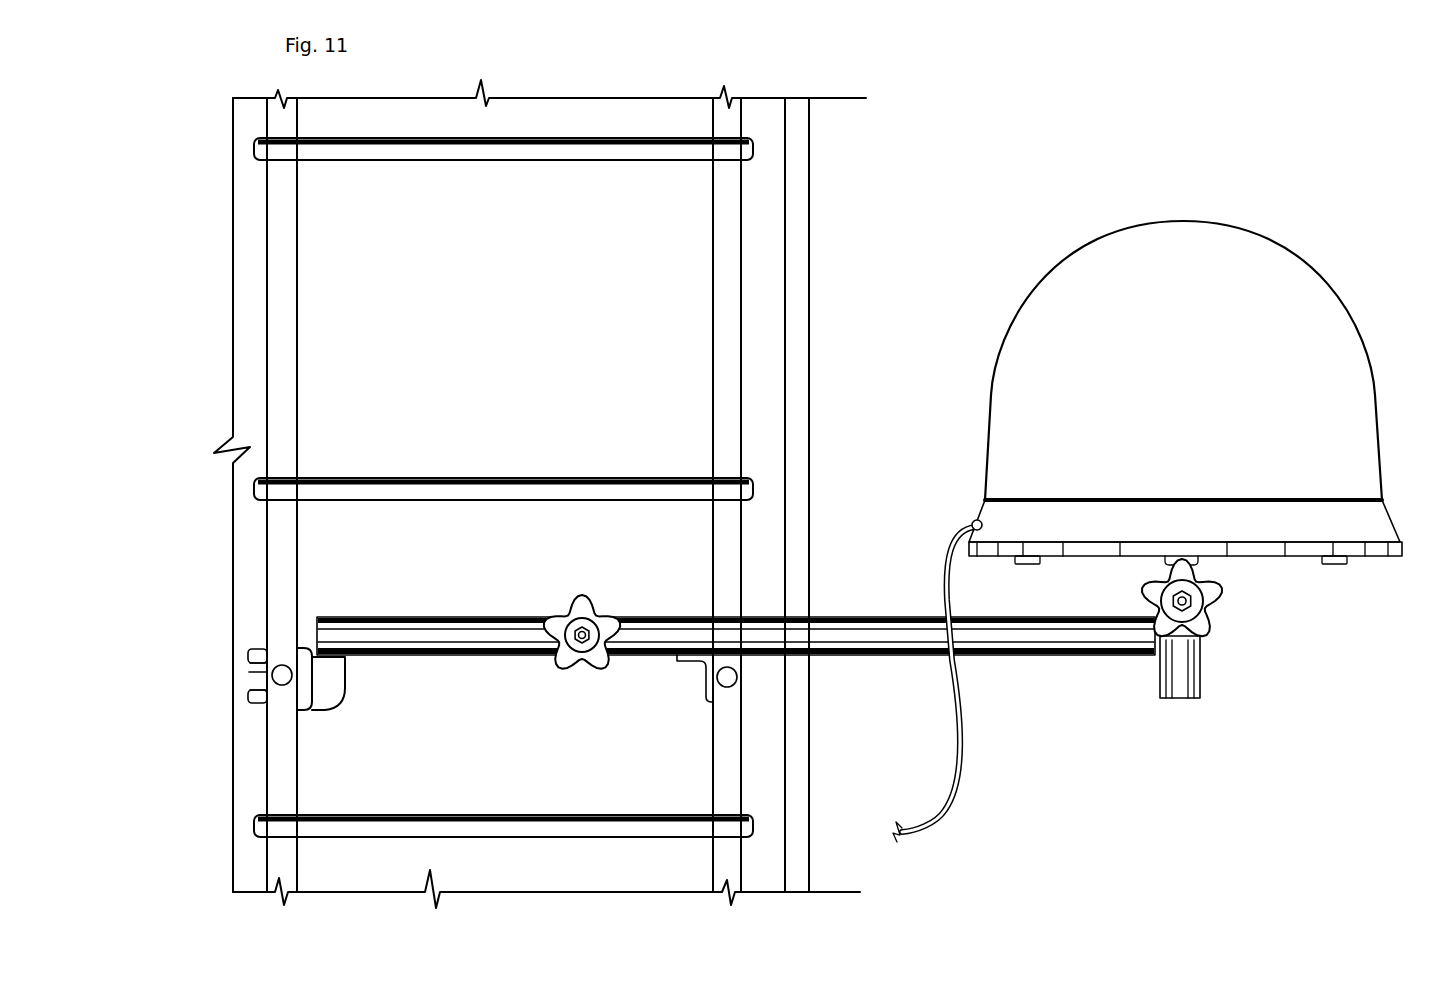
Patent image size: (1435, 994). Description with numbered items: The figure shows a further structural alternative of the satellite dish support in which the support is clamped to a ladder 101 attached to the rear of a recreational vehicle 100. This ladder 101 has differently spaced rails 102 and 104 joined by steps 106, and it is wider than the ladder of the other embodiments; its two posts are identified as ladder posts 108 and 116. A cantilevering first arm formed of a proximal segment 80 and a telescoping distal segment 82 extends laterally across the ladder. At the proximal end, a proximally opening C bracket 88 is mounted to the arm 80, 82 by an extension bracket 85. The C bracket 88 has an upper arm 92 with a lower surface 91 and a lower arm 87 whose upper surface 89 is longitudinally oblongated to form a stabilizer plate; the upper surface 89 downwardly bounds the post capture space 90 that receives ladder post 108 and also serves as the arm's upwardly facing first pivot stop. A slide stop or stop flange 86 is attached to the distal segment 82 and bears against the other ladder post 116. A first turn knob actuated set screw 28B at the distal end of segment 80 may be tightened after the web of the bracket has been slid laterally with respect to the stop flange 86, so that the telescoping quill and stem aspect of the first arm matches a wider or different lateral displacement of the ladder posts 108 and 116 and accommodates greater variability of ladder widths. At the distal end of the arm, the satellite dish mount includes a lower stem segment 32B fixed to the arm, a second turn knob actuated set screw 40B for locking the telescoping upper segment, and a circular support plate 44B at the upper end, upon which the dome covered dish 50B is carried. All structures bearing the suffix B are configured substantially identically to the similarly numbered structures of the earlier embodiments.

The ladder 101 is at (821, 269).
The recreational vehicle 100 is at (766, 216).
The ladder rail 102 is at (282, 383).
The ladder rail 104 is at (730, 545).
The steps 106 is at (597, 488).
The arm segment 80 is at (490, 646).
The distal arm segment 82 is at (652, 644).
The extension bracket 85 is at (335, 682).
The stop flange 86 is at (705, 686).
The lower arm 87 is at (262, 693).
The C bracket 88 is at (305, 680).
The upper surface 89 is at (253, 686).
The post capture space 90 is at (255, 677).
The lower surface 91 is at (260, 672).
The upper arm 92 is at (258, 650).
The ladder post 108 is at (283, 682).
The ladder post 116 is at (728, 688).
The first set screw 28B is at (581, 603).
The lower segment 32B is at (1165, 683).
The second turn knob actuated set screw 40B is at (1205, 625).
The circular support plate 44B is at (1263, 550).
The dome covered dish 50B is at (1255, 267).